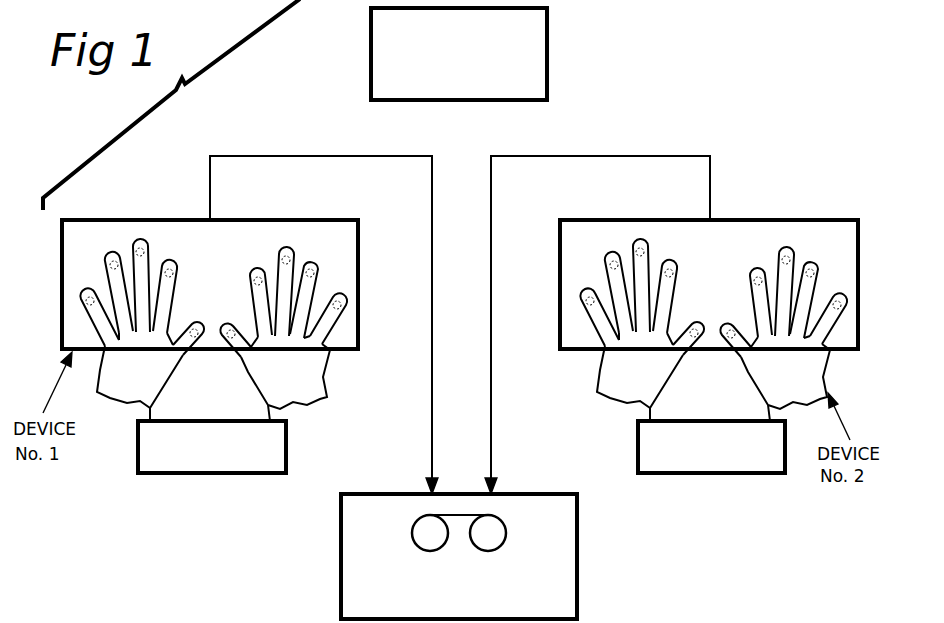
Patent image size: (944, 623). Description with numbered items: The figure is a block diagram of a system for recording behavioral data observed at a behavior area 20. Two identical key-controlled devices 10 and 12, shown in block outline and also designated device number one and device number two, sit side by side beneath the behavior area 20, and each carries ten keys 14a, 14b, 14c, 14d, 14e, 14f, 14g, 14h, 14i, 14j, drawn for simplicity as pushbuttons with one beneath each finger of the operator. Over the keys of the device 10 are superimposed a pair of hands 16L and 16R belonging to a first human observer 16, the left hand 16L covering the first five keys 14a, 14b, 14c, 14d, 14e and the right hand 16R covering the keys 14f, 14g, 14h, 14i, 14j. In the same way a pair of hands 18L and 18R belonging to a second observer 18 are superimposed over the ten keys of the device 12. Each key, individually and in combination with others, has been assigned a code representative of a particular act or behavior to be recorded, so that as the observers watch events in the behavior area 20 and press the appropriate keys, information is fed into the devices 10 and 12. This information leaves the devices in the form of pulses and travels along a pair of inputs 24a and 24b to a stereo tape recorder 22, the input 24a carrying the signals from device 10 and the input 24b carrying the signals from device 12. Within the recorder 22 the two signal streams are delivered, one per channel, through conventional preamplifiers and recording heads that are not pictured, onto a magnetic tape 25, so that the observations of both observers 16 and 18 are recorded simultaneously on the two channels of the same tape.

The key-controlled device 10 is at (60, 315).
The key-controlled device 12 is at (558, 352).
The key 14a is at (80, 293).
The key 14b is at (110, 247).
The key 14c is at (140, 236).
The key 14d is at (170, 256).
The key 14e is at (199, 338).
The key 14f is at (224, 320).
The key 14g is at (255, 266).
The key 14h is at (287, 243).
The key 14i is at (316, 258).
The key 14j is at (347, 298).
The human observer 16 is at (192, 474).
The left hand 16L is at (150, 373).
The right hand 16R is at (313, 405).
The second observer 18 is at (712, 474).
The left hand 18L is at (620, 383).
The right hand 18R is at (826, 381).
The observation area 20 is at (547, 40).
The stereo tape recorder 22 is at (578, 567).
The input 24a is at (430, 383).
The input 24b is at (491, 457).
The magnetic tape 25 is at (455, 514).